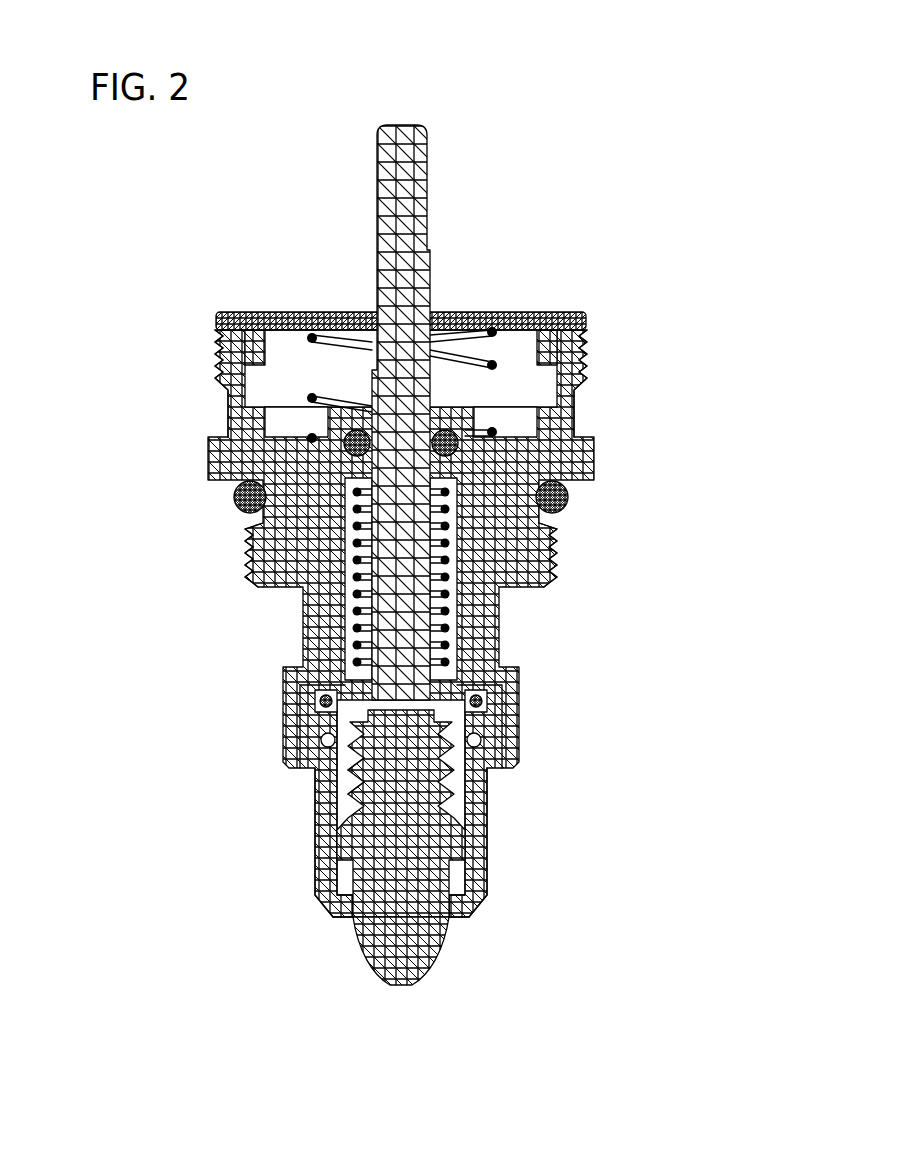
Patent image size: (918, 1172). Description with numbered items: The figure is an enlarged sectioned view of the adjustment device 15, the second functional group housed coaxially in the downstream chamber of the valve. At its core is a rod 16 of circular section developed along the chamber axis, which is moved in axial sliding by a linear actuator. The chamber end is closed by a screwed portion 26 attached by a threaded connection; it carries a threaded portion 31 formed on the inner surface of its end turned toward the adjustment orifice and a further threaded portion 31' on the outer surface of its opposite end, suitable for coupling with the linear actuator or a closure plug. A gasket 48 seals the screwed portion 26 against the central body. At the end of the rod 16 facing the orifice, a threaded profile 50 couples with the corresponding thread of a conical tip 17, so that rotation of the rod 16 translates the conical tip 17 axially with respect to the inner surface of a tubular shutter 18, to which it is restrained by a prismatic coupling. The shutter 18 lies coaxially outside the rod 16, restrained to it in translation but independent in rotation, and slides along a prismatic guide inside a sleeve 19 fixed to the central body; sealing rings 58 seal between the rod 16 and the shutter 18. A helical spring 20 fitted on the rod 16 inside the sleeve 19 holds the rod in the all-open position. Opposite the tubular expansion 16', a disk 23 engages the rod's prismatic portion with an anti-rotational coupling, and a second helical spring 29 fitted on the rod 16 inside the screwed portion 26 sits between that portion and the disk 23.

The adjustment device 15 is at (678, 413).
The rod 16 is at (455, 395).
The tubular expansion 16' is at (492, 813).
The conical tip 17 is at (427, 932).
The tubular shutter 18 is at (490, 828).
The sleeve 19 is at (510, 723).
The helical spring 20 is at (443, 572).
The disk 23 is at (452, 312).
The screwed portion 26 is at (592, 363).
The helical spring 29 is at (537, 310).
The threaded portion 31 is at (331, 557).
The further threaded portion 31' is at (154, 361).
The gasket 48 is at (567, 500).
The threaded profile 50 is at (363, 793).
The sealing rings 58 is at (492, 698).